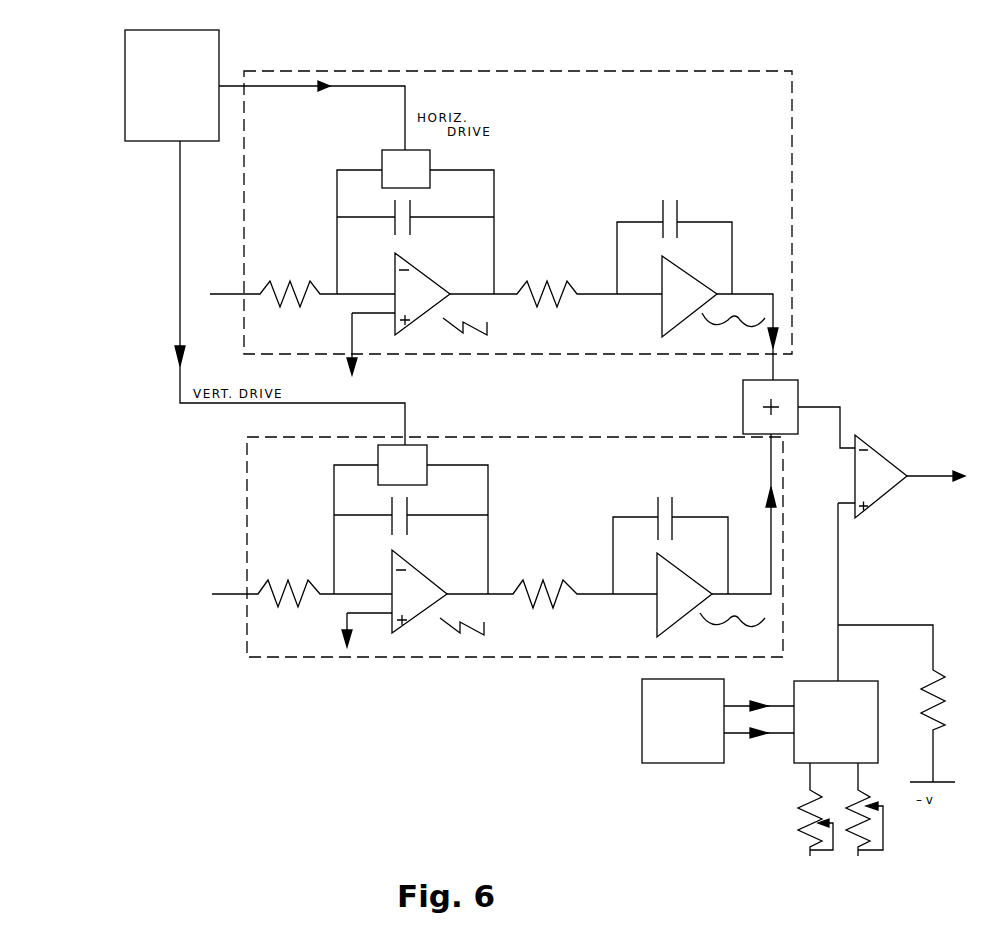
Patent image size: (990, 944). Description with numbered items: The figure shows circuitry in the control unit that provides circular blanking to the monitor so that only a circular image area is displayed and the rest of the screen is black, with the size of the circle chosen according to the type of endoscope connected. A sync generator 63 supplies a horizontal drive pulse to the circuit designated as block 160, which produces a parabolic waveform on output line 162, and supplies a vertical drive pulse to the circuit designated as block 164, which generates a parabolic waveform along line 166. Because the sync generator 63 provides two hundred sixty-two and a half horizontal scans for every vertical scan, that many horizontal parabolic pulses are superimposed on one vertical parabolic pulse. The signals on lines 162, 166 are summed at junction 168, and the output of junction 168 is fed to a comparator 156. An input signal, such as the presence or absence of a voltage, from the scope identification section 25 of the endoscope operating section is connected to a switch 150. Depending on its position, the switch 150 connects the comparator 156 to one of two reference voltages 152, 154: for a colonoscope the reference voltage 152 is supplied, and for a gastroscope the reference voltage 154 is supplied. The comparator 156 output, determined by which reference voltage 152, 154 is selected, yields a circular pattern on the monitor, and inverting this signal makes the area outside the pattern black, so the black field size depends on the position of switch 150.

The sync generator 63 is at (147, 113).
The block 160 is at (532, 91).
The output line 162 is at (777, 313).
The block 164 is at (277, 632).
The line 166 is at (770, 558).
The junction 168 is at (785, 378).
The comparator 156 is at (865, 441).
The switch 150 is at (858, 681).
The scope identification section 25 is at (642, 762).
The reference voltage 152 is at (786, 805).
The reference voltage 154 is at (902, 828).